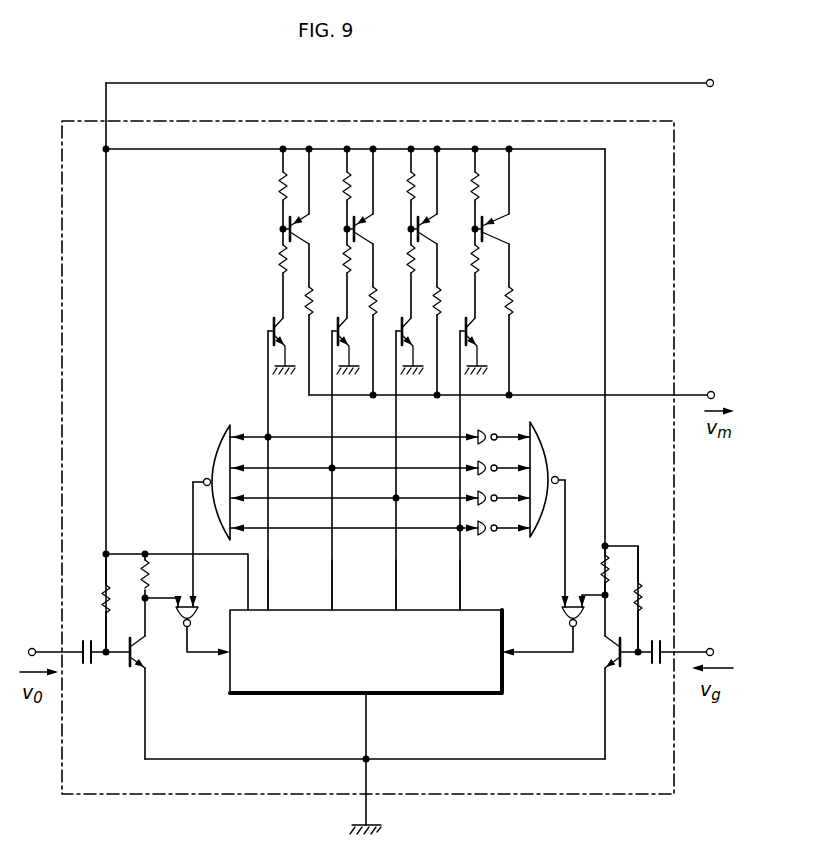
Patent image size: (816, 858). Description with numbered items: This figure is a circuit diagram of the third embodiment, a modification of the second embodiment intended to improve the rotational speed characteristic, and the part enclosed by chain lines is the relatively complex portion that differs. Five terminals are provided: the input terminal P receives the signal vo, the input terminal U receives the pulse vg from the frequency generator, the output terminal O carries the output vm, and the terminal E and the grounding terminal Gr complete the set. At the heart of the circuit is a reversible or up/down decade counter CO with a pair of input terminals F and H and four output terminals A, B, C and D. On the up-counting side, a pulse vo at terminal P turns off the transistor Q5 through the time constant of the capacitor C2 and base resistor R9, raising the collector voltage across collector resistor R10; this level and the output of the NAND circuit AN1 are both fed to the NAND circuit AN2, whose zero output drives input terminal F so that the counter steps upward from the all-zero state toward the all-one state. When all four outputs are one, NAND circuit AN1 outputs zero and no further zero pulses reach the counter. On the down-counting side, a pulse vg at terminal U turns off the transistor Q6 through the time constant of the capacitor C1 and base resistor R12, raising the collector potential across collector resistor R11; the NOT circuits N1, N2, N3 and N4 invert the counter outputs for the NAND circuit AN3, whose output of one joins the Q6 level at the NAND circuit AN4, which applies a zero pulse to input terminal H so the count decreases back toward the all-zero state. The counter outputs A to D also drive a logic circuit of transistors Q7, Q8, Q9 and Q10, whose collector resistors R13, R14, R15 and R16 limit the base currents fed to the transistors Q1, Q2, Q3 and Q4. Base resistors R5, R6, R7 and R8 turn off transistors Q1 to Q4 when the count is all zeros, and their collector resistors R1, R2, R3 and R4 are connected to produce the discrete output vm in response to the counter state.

The terminal E is at (419, 85).
The output terminal O is at (522, 397).
The input terminal P is at (46, 653).
The input terminal U is at (697, 653).
The collector resistor R1 is at (313, 306).
The collector resistor R2 is at (377, 306).
The collector resistor R3 is at (441, 306).
The collector resistor R4 is at (513, 306).
The base resistor R5 is at (280, 191).
The base resistor R6 is at (344, 191).
The base resistor R7 is at (408, 191).
The base resistor R8 is at (472, 191).
The base resistor R9 is at (104, 599).
The collector resistor R10 is at (150, 583).
The collector resistor R11 is at (601, 566).
The base resistor R12 is at (645, 592).
The collector resistor R13 is at (280, 265).
The collector resistor R14 is at (344, 265).
The collector resistor R15 is at (408, 265).
The collector resistor R16 is at (472, 265).
The transistor Q1 is at (300, 221).
The transistor Q2 is at (364, 221).
The transistor Q3 is at (428, 221).
The transistor Q4 is at (496, 221).
The transistor Q5 is at (142, 655).
The transistor Q6 is at (612, 647).
The transistor Q7 is at (291, 334).
The transistor Q8 is at (355, 334).
The transistor Q9 is at (419, 334).
The transistor Q10 is at (483, 334).
The NAND circuit AN1 is at (216, 462).
The NAND circuit AN2 is at (189, 603).
The NAND circuit AN3 is at (541, 452).
The NAND circuit AN4 is at (562, 617).
The NOT circuit N1 is at (485, 444).
The NOT circuit N2 is at (485, 475).
The NOT circuit N3 is at (485, 505).
The NOT circuit N4 is at (485, 535).
The capacitor C1 is at (656, 668).
The capacitor C2 is at (88, 668).
The reversible counter CO is at (273, 695).
The grounding terminal Gr is at (368, 727).
The output terminal A is at (270, 585).
The output terminal B is at (334, 585).
The output terminal C is at (398, 585).
The output terminal D is at (462, 585).
The input terminal F is at (204, 658).
The input terminal H is at (526, 658).